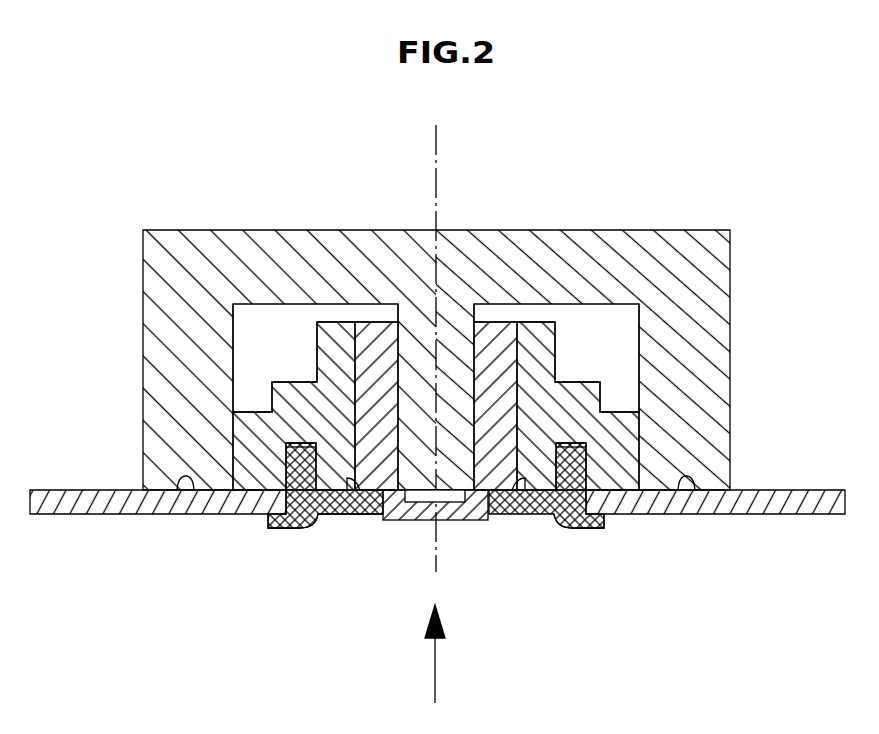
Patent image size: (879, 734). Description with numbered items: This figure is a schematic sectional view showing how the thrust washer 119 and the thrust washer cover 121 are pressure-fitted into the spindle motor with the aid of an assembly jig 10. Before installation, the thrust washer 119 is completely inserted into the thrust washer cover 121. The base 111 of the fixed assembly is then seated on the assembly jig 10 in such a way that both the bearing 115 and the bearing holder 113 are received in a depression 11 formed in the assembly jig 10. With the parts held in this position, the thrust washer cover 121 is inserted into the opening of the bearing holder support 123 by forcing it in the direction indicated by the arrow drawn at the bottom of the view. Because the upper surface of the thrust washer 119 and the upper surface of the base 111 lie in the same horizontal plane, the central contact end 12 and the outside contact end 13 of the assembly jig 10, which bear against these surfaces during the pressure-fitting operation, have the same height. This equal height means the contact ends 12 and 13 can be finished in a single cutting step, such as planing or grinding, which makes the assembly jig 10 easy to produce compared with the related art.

The assembly jig 10 is at (334, 245).
The depression 11 is at (253, 339).
The central contact end 12 is at (343, 514).
The outside contact end 13 is at (176, 490).
The base 111 is at (746, 514).
The bearing holder 113 is at (268, 457).
The bearing 115 is at (377, 458).
The thrust washer 119 is at (445, 496).
The thrust washer cover 121 is at (422, 505).
The bearing holder support 123 is at (578, 522).